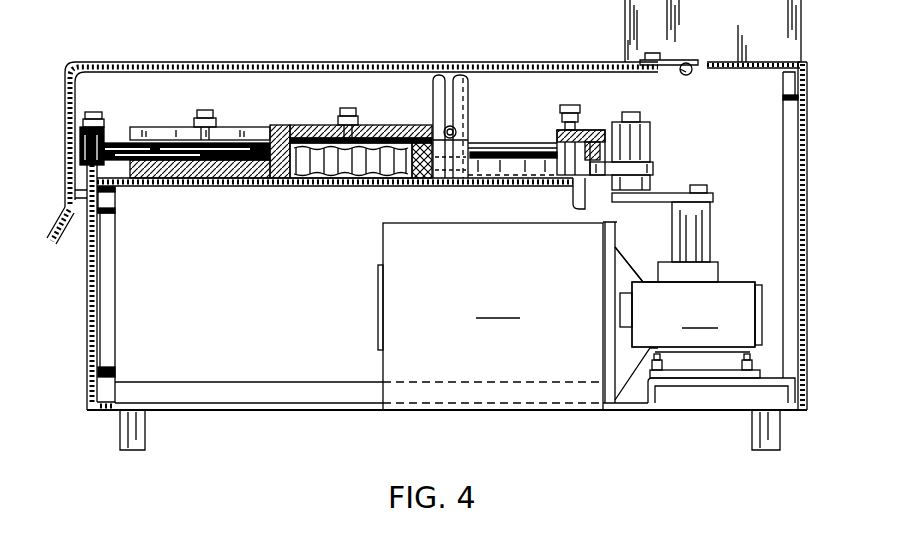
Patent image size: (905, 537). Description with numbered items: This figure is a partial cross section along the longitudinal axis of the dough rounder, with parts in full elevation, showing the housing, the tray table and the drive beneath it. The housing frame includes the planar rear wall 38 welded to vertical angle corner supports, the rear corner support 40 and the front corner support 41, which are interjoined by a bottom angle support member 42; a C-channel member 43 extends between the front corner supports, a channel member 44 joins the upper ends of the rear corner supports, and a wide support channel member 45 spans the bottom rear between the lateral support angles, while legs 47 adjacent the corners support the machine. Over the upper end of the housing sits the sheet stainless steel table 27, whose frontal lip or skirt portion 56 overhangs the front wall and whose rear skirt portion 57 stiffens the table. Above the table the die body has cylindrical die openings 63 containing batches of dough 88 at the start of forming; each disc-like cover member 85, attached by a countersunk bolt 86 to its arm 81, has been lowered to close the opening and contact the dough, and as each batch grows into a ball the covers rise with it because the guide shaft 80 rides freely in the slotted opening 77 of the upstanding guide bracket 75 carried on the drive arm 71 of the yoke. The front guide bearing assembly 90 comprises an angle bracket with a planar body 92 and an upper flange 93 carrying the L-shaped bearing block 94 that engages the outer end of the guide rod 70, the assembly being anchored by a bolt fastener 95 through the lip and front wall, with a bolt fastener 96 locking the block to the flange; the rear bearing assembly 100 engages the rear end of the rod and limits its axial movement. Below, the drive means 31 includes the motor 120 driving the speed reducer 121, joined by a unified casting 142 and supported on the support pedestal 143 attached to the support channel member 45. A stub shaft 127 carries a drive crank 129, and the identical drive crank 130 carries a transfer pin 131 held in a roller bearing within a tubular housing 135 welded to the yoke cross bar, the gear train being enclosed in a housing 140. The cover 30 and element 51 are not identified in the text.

The table 27 is at (296, 188).
The housing cover 30 is at (312, 58).
The drive means 31 is at (727, 276).
The rear wall 38 is at (806, 286).
The rear corner support 40 is at (781, 152).
The front corner support 41 is at (116, 295).
The angle support member 42 is at (290, 380).
The C-channel member 43 is at (117, 207).
The channel member 44 is at (785, 94).
The support channel member 45 is at (668, 385).
The leg 47 is at (119, 430).
The column 51 is at (804, 33).
The skirt portion 56 is at (84, 207).
The skirt portion 57 is at (580, 200).
The die opening 63 is at (410, 178).
The guide rod 70 is at (505, 143).
The drive arm 71 is at (650, 168).
The guide bracket 75 is at (470, 93).
The slotted opening 77 is at (441, 109).
The guide shaft 80 is at (455, 129).
The arm 81 is at (300, 127).
The cover member 85 is at (318, 172).
The bolt 86 is at (202, 112).
The dough 88 is at (365, 170).
The front guide bearing assembly 90 is at (110, 118).
The planar body 92 is at (87, 152).
The upper flange 93 is at (78, 118).
The bearing block 94 is at (110, 137).
The bolt fastener 95 is at (72, 200).
The bolt fastener 96 is at (92, 112).
The rear bearing assembly 100 is at (584, 110).
The motor 120 is at (490, 316).
The speed reducer 121 is at (691, 307).
The stub shaft 127 is at (670, 250).
The drive crank 129 is at (716, 196).
The drive crank 130 is at (648, 204).
The transfer pin 131 is at (627, 121).
The tubular housing 135 is at (651, 136).
The housing 140 is at (706, 250).
The unified casting 142 is at (624, 258).
The support pedestal 143 is at (752, 360).